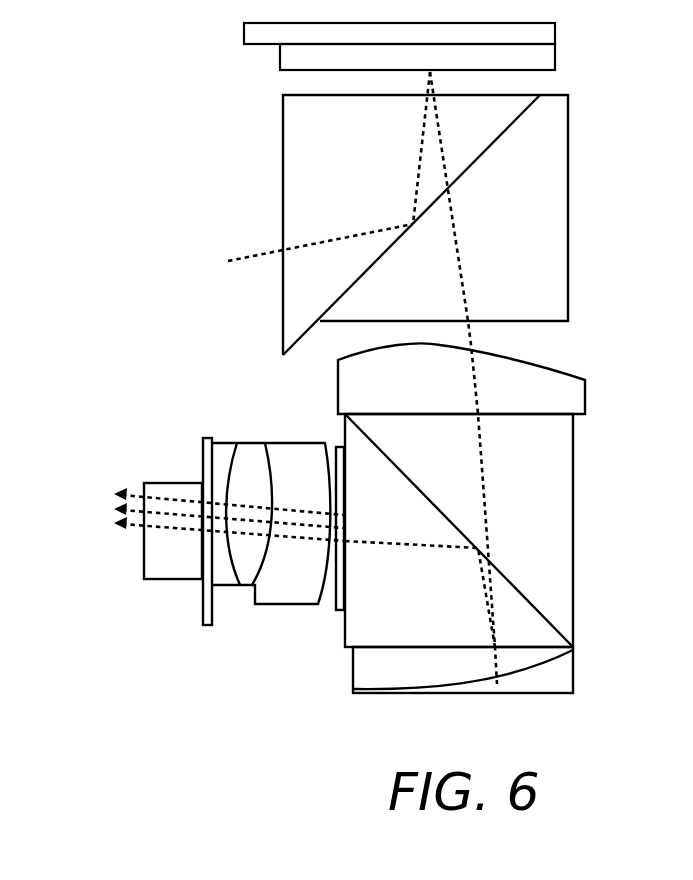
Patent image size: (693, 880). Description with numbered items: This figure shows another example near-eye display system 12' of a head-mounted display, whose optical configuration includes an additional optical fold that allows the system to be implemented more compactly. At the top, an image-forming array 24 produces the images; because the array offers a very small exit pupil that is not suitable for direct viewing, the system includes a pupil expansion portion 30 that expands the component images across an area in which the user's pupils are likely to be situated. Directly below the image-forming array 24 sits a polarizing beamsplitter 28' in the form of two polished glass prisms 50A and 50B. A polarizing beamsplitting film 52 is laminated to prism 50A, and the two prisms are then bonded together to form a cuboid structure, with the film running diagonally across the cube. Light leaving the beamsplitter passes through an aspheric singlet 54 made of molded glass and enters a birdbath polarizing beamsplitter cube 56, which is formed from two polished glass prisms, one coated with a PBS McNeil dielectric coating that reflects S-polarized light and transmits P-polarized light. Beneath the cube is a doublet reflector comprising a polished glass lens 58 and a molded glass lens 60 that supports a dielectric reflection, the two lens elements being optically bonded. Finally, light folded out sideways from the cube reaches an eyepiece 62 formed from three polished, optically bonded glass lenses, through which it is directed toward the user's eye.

The near-eye display system 12' is at (356, 358).
The image-forming array 24 is at (555, 57).
The polarizing beamsplitter 28' is at (429, 225).
The polished glass prism 50A is at (373, 179).
The polished glass prism 50B is at (531, 249).
The polarizing beamsplitting film 52 is at (470, 168).
The aspheric singlet 54 is at (585, 396).
The birdbath polarizing beamsplitter cube 56 is at (638, 569).
The polished glass lens 58 is at (353, 668).
The molded glass lens 60 is at (573, 675).
The eyepiece 62 is at (186, 423).
The pupil expansion portion 30 is at (340, 446).